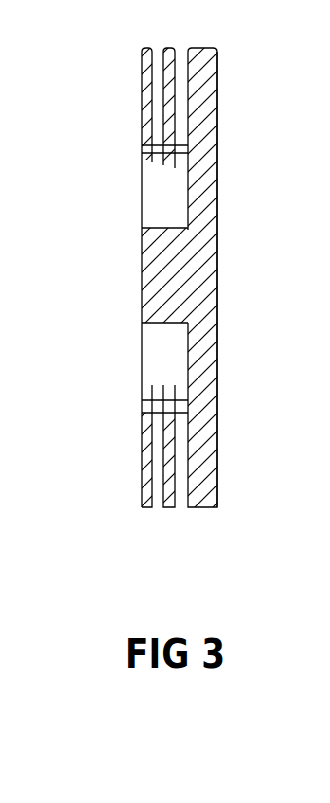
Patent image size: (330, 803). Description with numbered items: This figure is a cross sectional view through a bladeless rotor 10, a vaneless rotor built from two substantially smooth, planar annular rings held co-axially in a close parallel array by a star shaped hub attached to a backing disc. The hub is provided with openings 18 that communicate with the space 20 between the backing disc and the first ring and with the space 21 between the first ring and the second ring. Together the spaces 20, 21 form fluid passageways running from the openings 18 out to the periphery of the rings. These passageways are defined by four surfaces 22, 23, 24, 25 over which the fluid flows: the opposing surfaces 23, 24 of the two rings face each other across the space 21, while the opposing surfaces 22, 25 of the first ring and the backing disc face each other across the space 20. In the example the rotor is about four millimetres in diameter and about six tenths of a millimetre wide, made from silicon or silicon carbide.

The bladeless rotor 10 is at (228, 183).
The openings/apertures 18 is at (145, 206).
The space 20 is at (183, 512).
The space 21 is at (158, 512).
The surface 22 is at (177, 449).
The surface 23 is at (158, 481).
The surface 24 is at (145, 440).
The surface 25 is at (205, 492).